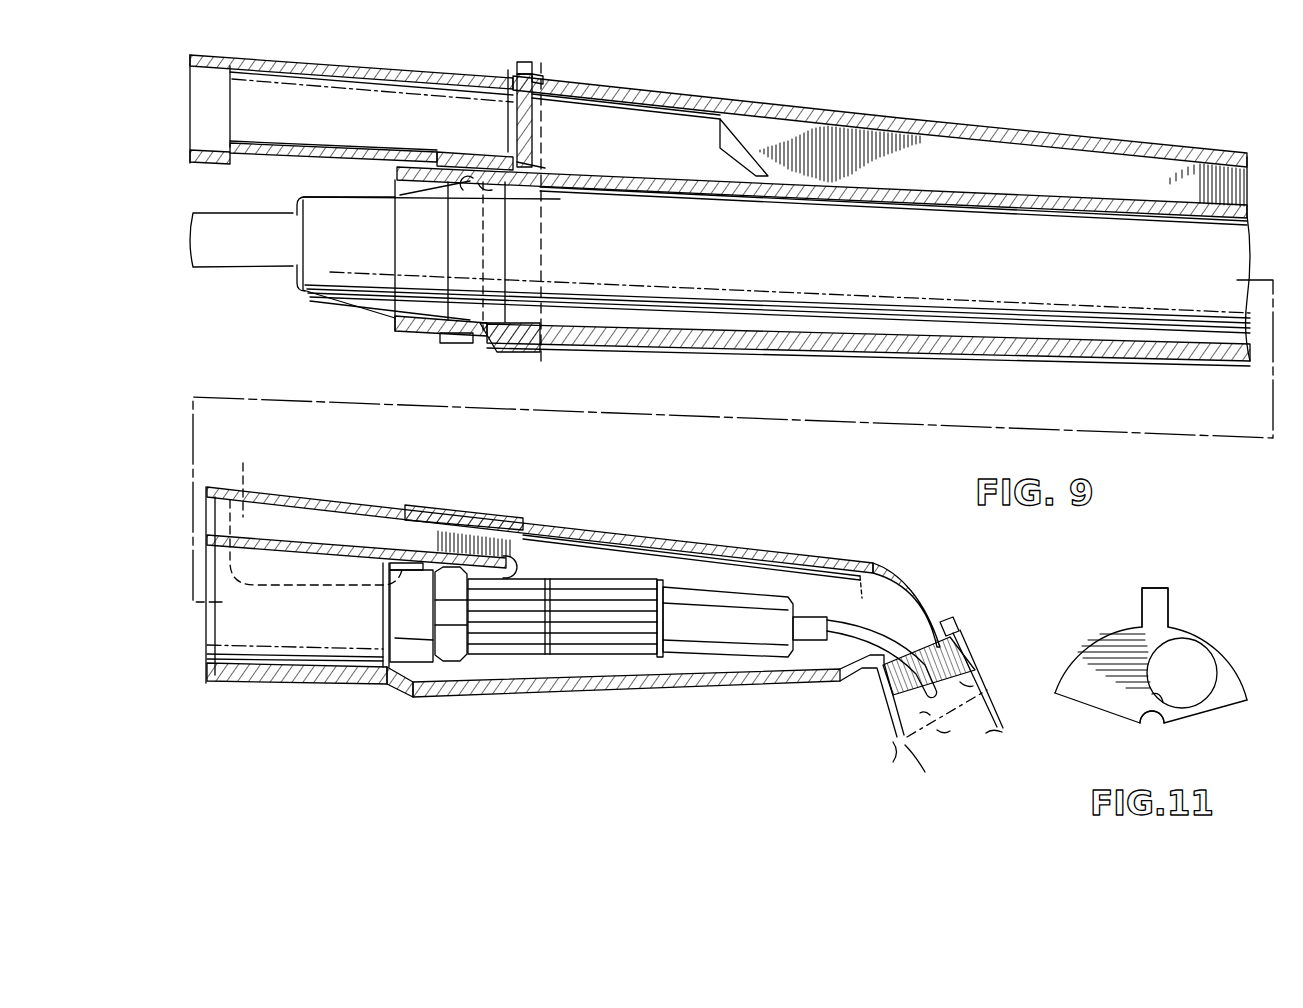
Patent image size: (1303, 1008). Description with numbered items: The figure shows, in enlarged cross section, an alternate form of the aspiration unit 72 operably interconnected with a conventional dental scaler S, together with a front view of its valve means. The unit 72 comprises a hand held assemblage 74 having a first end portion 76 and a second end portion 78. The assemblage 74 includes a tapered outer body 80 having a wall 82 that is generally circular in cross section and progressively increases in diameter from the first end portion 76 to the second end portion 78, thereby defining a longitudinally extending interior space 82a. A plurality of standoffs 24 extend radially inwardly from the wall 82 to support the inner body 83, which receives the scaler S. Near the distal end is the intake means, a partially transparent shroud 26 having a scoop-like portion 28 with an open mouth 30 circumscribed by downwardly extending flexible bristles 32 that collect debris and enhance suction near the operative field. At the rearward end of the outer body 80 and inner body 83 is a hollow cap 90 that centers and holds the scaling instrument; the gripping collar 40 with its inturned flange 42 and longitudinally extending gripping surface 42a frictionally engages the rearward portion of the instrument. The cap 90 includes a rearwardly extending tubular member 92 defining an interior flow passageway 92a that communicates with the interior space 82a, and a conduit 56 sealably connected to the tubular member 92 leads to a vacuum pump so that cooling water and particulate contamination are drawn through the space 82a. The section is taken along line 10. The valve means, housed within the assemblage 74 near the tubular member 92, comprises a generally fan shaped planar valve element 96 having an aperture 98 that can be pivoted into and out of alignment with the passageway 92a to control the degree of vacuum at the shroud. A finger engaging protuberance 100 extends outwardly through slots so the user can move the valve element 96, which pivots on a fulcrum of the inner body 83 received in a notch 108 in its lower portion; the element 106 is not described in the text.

In FIG. 9, the section line 10- 10 is at (498, 42).
In FIG. 9, the standoffs 24 is at (745, 158).
In FIG. 9, the shroud 26 is at (757, 534).
In FIG. 9, the scoop-like portion 28 is at (920, 590).
In FIG. 9, the open mouth 30 is at (930, 640).
In FIG. 9, the flexible bristles 32 is at (962, 686).
In FIG. 9, the gripping collar 40 is at (460, 314).
In FIG. 9, the inturned flange 42 is at (463, 192).
In FIG. 9, the gripping surface 42a is at (547, 232).
In FIG. 9, the conduit 56 is at (214, 157).
In FIG. 9, the aspiration unit 72 is at (832, 98).
In FIG. 9, the hand held assemblage 74 is at (905, 100).
In FIG. 9, the first end portion 76 is at (437, 520).
In FIG. 9, the second end portion 78 is at (580, 84).
In FIG. 9, the outer body 80 is at (1013, 123).
In FIG. 9, the wall 82 is at (1098, 140).
In FIG. 9, the interior space 82a is at (673, 120).
In FIG. 9, the inner body 83 is at (1192, 222).
In FIG. 9, the hollow cap 90 is at (368, 64).
In FIG. 9, the tubular member 92 is at (337, 74).
In FIG. 9, the interior flow passageway 92a is at (371, 91).
In FIG. 9, the valve element 96 is at (521, 128).
In FIG. 11, the valve element 96 is at (1118, 692).
In FIG. 9, the aperture 98 is at (537, 117).
In FIG. 11, the aperture 98 is at (1197, 658).
In FIG. 9, the finger engaging protuberance 100 is at (481, 92).
In FIG. 11, the finger engaging protuberance 100 is at (1149, 590).
In FIG. 9, the clip foot 106 is at (543, 163).
In FIG. 11, the notch 108 is at (1155, 720).
In FIG. 9, the scaler S is at (623, 635).